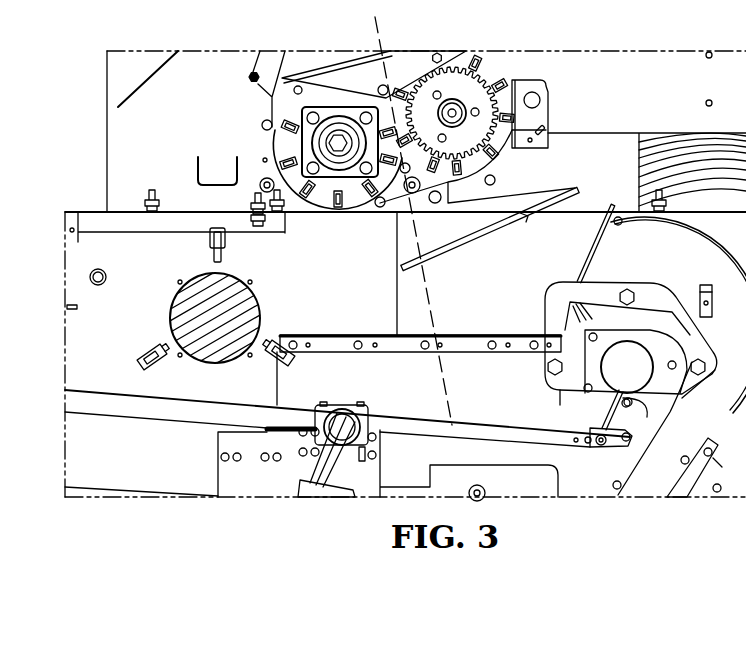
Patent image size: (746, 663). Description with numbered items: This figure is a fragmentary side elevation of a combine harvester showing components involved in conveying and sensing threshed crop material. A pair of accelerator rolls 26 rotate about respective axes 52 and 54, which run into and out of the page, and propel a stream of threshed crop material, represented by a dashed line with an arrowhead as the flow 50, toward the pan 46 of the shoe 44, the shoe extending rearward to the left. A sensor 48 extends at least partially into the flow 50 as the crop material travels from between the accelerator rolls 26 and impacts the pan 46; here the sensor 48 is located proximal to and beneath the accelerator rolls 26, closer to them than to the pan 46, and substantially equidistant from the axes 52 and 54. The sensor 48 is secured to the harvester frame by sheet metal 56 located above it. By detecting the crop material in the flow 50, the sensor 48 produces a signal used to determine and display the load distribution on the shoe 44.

The accelerator rolls 26 is at (516, 72).
The shoe 44 is at (245, 425).
The pan 46 is at (548, 406).
The sensor 48 is at (460, 242).
The flow of threshed crop material 50 is at (432, 303).
The axis of accelerator roll 52 is at (338, 143).
The axis of accelerator roll 54 is at (450, 115).
The sheet metal 56 is at (558, 190).